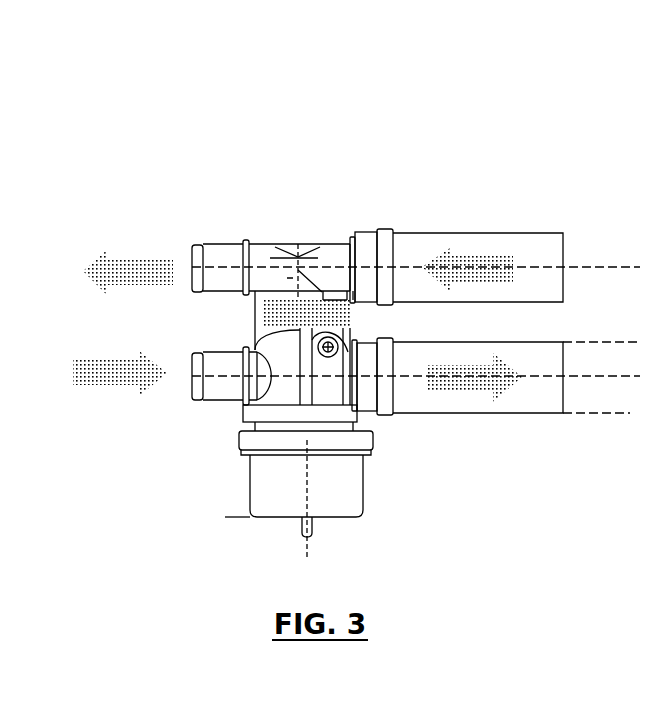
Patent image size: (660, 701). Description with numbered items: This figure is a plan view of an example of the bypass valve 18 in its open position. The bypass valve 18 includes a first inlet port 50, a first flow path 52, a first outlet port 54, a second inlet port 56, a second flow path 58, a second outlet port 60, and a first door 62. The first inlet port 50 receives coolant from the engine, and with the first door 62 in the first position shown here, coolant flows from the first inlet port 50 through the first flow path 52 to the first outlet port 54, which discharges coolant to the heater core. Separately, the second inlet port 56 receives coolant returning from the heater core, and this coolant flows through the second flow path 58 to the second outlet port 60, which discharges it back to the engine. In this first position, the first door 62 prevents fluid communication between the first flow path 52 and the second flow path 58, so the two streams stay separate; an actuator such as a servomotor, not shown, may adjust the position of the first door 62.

The bypass valve 18 is at (116, 71).
The first inlet port 50 is at (190, 383).
The first flow path 52 is at (403, 392).
The first outlet port 54 is at (563, 387).
The second inlet port 56 is at (563, 252).
The second flow path 58 is at (407, 242).
The second outlet port 60 is at (192, 258).
The first door 62 is at (262, 316).